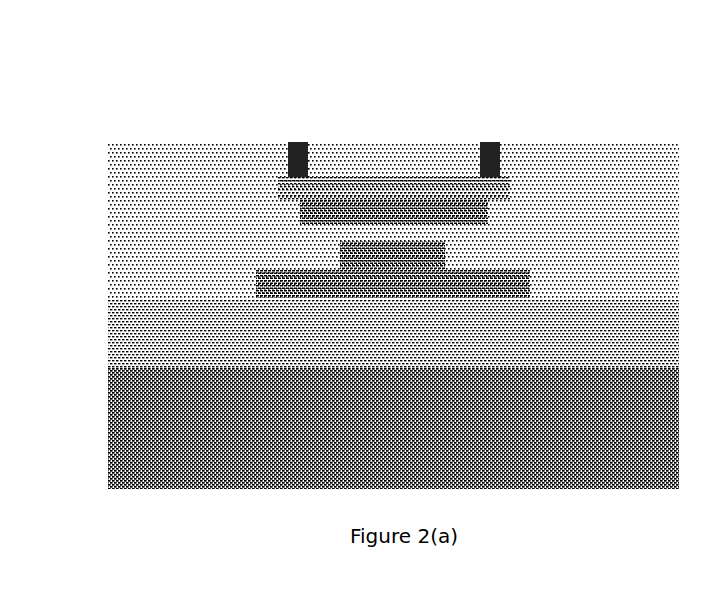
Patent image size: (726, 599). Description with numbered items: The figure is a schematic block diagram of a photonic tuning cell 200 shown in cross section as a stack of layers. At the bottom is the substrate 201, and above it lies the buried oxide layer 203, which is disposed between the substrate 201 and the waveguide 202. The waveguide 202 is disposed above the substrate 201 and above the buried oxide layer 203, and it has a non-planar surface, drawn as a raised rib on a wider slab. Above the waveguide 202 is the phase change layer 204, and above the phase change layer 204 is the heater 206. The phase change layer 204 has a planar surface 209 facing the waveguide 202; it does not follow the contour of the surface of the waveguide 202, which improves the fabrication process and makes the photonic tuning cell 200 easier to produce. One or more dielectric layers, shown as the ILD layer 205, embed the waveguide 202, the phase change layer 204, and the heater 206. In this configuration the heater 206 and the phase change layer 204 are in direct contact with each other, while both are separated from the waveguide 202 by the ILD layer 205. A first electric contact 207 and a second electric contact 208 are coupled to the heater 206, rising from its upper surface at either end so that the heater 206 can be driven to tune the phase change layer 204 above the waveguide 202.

The photonic tuning cell 200 is at (369, 262).
The substrate 201 is at (393, 428).
The waveguide 202 is at (392, 256).
The buried oxide layer 203 is at (393, 334).
The phase change layer 204 is at (394, 212).
The ILD layer 205 is at (393, 221).
The heater 206 is at (394, 188).
The first electric contact 207 is at (488, 141).
The second electric contact 208 is at (301, 141).
The planar surface 209 is at (340, 221).